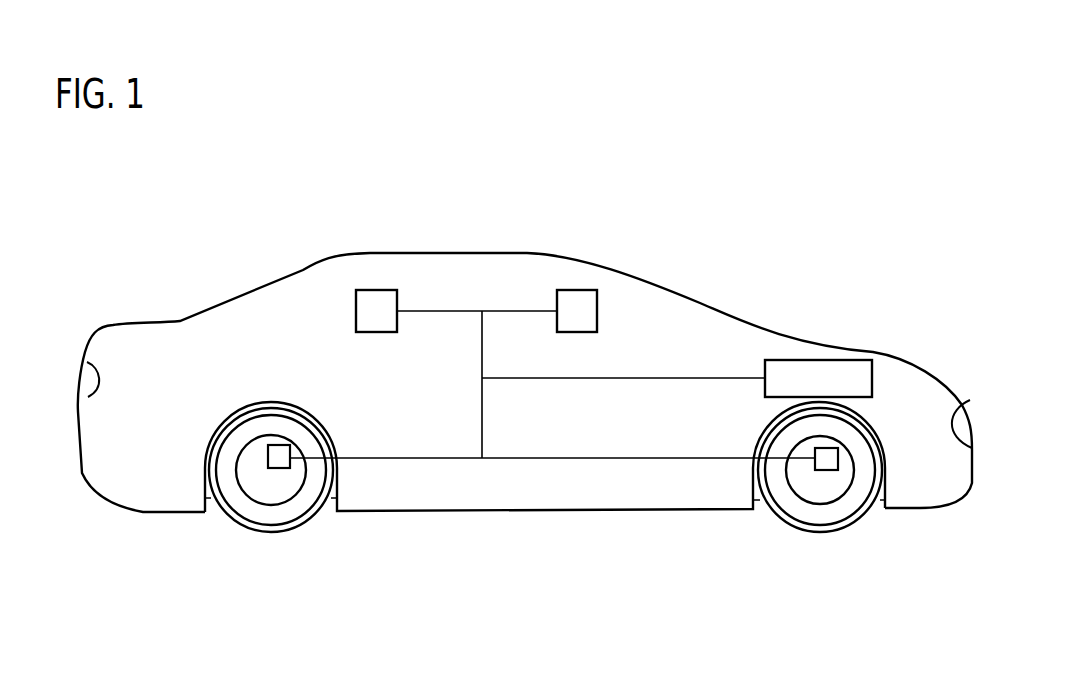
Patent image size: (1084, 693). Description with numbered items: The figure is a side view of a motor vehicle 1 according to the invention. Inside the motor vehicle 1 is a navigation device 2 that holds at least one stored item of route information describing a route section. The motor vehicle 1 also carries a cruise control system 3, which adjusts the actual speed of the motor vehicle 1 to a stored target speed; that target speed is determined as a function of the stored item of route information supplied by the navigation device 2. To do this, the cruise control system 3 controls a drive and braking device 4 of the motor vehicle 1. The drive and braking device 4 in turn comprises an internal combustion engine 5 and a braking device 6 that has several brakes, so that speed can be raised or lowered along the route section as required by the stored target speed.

The motor vehicle 1 is at (380, 243).
The navigation device 2 is at (355, 309).
The cruise control system 3 is at (598, 312).
The drive and braking device 4 is at (457, 367).
The internal combustion engine 5 is at (817, 358).
The braking device 6 is at (278, 469).